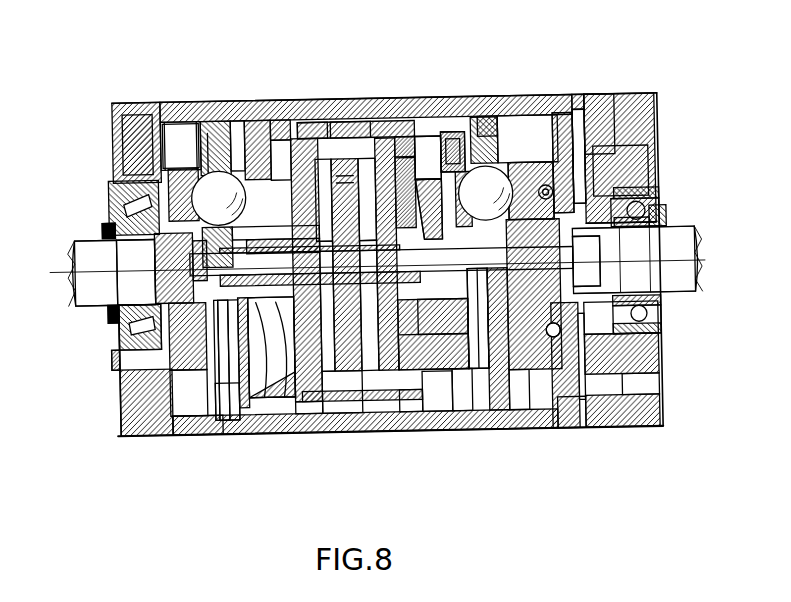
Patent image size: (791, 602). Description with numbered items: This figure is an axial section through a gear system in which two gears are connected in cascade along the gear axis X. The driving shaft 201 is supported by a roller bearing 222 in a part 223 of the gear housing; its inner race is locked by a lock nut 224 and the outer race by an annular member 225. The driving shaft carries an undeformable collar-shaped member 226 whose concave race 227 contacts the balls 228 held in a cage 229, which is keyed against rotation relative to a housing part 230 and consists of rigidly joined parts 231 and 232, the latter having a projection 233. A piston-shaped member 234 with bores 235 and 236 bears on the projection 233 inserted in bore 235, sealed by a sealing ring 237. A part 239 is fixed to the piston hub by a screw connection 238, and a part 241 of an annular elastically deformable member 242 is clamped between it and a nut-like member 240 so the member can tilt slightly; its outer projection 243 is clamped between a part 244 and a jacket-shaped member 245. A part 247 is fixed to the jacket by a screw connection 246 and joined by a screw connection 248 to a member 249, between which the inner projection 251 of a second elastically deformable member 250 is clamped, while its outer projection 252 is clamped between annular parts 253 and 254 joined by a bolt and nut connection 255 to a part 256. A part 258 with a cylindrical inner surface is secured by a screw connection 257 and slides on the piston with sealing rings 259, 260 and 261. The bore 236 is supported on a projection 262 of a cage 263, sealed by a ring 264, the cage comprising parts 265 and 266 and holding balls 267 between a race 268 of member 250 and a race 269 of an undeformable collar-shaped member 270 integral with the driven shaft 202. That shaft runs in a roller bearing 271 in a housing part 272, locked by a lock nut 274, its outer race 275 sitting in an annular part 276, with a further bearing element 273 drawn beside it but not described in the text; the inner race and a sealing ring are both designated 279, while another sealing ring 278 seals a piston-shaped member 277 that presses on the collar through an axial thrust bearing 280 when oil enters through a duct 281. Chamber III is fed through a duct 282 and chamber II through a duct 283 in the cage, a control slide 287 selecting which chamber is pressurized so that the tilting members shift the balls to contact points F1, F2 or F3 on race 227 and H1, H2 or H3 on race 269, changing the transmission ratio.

The driving shaft 201 is at (110, 298).
The driven shaft 202 is at (663, 245).
The roller bearing 222 is at (135, 333).
The part of the gear housing 223 is at (120, 100).
The lock nut 224 is at (105, 228).
The annular member 225 is at (115, 358).
The undeformable collar-shaped member 226 is at (170, 357).
The concave race 227 is at (140, 390).
The balls 228 is at (130, 123).
The cage 229 is at (168, 128).
The part of the gear housing 230 is at (206, 120).
The part of the cage 231 is at (212, 130).
The part of the cage 232 is at (244, 120).
The projection 233 is at (243, 400).
The piston-shaped member 234 is at (327, 290).
The bore 235 is at (320, 436).
The bore 236 is at (370, 285).
The sealing ring 237 is at (305, 140).
The screw connection 238 is at (262, 400).
The part 239 is at (225, 400).
The member acting as a nut 240 is at (222, 436).
The part of the annular elastically deformable member 241 is at (200, 395).
The annular elastically deformable member 242 is at (182, 436).
The projection 243 is at (250, 115).
The part 244 is at (282, 112).
The jacket-shaped member 245 is at (347, 160).
The screw connection 246 is at (392, 140).
The part 247 is at (430, 140).
The screw connection 248 is at (420, 395).
The member 249 is at (462, 436).
The elastically deformable annular member 250 is at (493, 130).
The projection 251 is at (566, 273).
The projection 252 is at (458, 148).
The annular part 253 is at (482, 410).
The annular part 254 is at (512, 436).
The bolt and nut connection 255 is at (425, 436).
The part 256 is at (400, 436).
The screw connection 257 is at (352, 165).
The part having a cylindrical inner surface 258 is at (302, 128).
The sealing ring 259 is at (302, 437).
The sealing ring 260 is at (352, 125).
The sealing ring 261 is at (425, 210).
The projection 262 is at (448, 172).
The cage 263 is at (500, 135).
The sealing ring 264 is at (410, 436).
The part of the cage 265 is at (525, 195).
The part of the cage 266 is at (565, 125).
The balls 267 is at (496, 178).
The race 268 is at (476, 305).
The race 269 is at (570, 440).
The undeformable collar-shaped member 270 is at (580, 175).
The roller bearing 271 is at (662, 318).
The part of the gear housing 272 is at (622, 108).
The ball bearing 273 is at (653, 212).
The lock nut 274 is at (662, 308).
The outer race 275 is at (660, 335).
The annular part 276 is at (625, 205).
The piston-shaped member 277 is at (595, 400).
The sealing ring 278 is at (590, 100).
The inner race / sealing ring 279 is at (595, 198).
The axial thrust bearing 280 is at (556, 330).
The duct 281 is at (620, 410).
The duct 282 is at (192, 306).
The duct 283 is at (550, 340).
The control slide 287 is at (488, 595).
The contact point F1 is at (220, 192).
The contact point F2 is at (200, 194).
The contact point F3 is at (196, 214).
The contact point H1 is at (655, 146).
The contact point H2 is at (652, 122).
The contact point H3 is at (650, 100).
The gear axis X is at (376, 262).